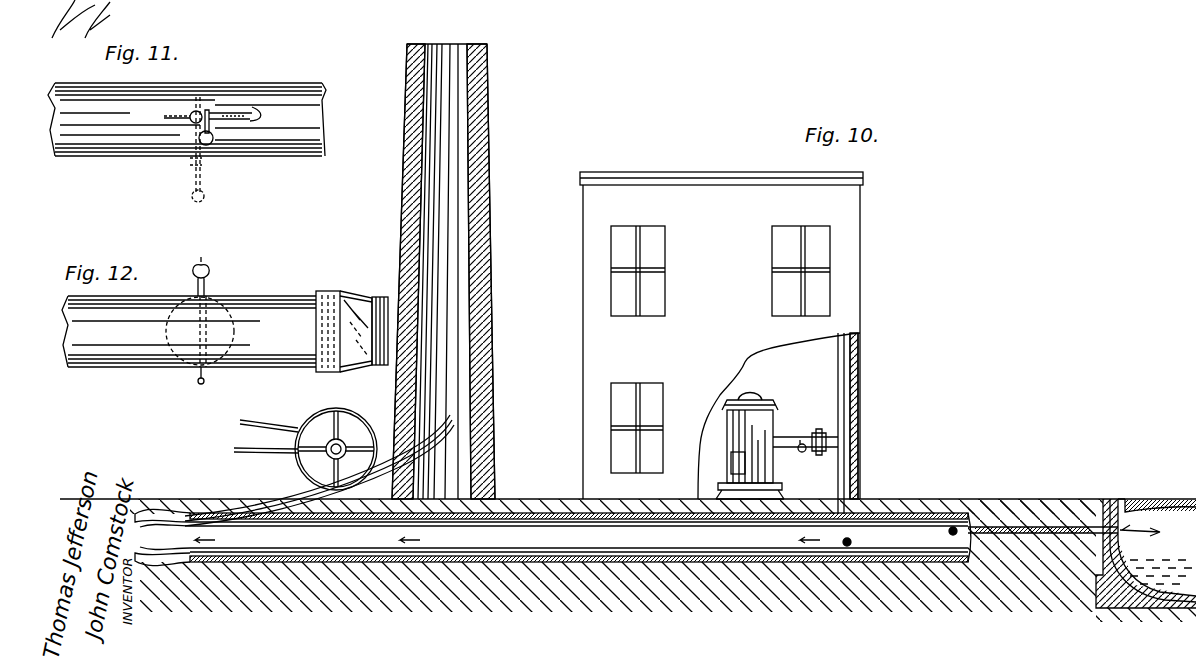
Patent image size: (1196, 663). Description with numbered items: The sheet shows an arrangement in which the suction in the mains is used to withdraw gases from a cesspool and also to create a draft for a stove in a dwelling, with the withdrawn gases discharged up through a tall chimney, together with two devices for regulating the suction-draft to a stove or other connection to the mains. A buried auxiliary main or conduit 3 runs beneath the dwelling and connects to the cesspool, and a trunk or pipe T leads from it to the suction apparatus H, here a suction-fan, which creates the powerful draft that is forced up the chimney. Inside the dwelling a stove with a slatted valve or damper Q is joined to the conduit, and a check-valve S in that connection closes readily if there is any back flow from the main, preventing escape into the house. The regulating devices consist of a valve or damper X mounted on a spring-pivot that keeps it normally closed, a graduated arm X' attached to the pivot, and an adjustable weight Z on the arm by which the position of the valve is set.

In FIG. 10, the auxiliary main or conduit 3 is at (553, 537).
In FIG. 10, the suction apparatus H is at (305, 449).
In FIG. 10, the trunk or pipe T is at (319, 470).
In FIG. 10, the slatted valve or damper Q is at (727, 463).
In FIG. 12, the check-valve S is at (352, 314).
In FIG. 10, the check-valve S is at (805, 434).
In FIG. 11, the valve or damper X is at (186, 149).
In FIG. 12, the valve or damper X is at (200, 320).
In FIG. 10, the valve or damper X is at (812, 458).
In FIG. 11, the graduated arm X' is at (224, 111).
In FIG. 11, the adjustable weight Z is at (234, 126).